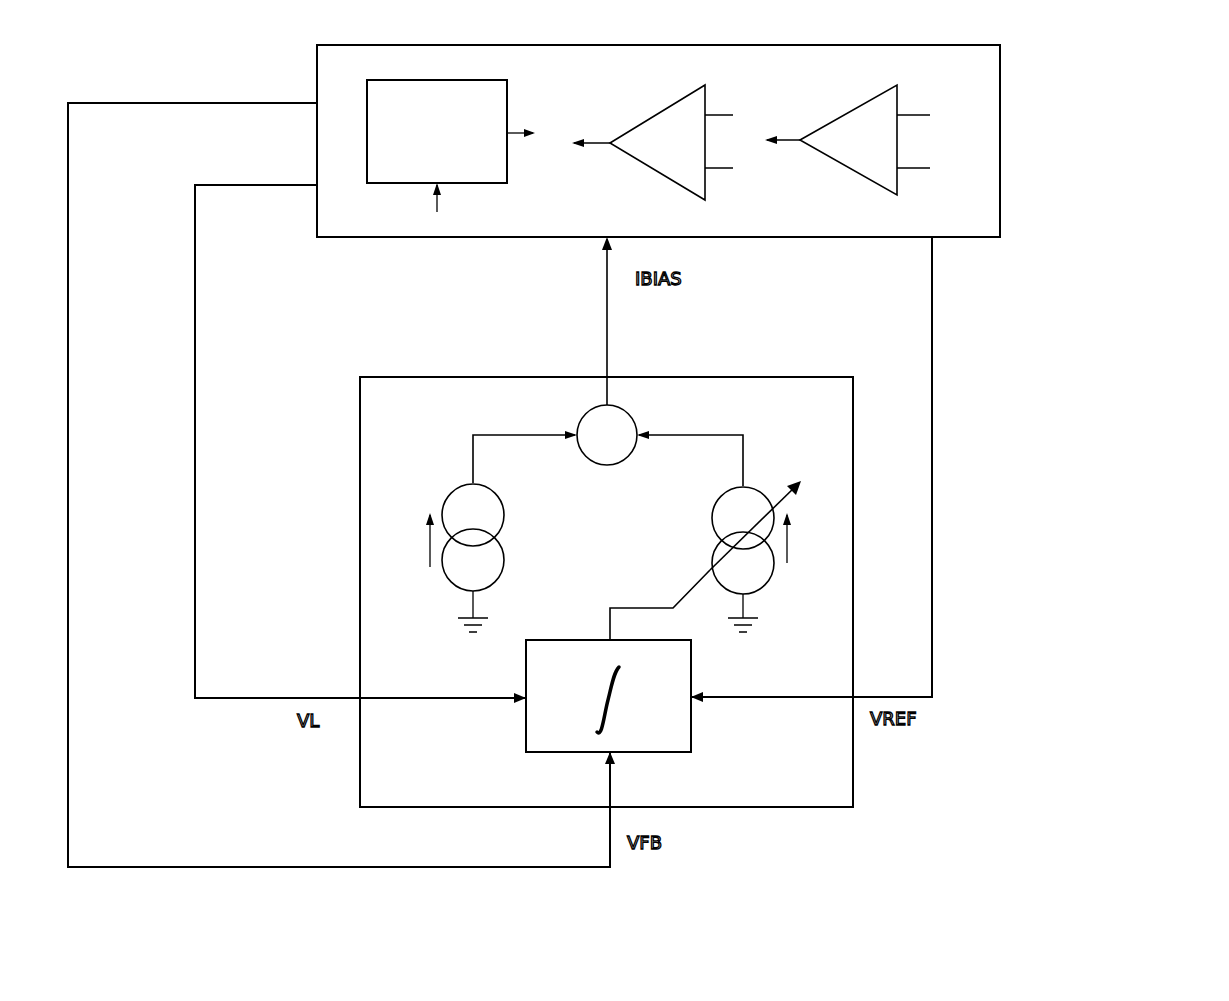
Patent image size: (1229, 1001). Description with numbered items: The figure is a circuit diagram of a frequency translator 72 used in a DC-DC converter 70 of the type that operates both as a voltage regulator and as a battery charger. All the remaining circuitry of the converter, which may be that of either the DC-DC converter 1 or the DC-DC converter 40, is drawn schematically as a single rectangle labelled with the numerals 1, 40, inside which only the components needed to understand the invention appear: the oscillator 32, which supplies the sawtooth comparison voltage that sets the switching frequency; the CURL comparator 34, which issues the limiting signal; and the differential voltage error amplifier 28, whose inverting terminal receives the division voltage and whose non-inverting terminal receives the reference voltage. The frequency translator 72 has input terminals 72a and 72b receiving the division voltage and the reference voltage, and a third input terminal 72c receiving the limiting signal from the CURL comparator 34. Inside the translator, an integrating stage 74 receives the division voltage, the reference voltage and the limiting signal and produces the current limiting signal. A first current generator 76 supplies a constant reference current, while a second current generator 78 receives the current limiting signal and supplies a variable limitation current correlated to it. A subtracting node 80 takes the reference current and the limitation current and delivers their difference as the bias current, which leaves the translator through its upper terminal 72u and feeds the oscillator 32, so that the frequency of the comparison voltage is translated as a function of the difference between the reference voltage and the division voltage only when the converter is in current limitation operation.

The DC-DC converter 1 is at (658, 119).
The DC-DC converter 40 is at (748, 60).
The oscillator 32 is at (493, 108).
The CURL comparator 34 is at (645, 123).
The differential voltage error amplifier 28 is at (835, 128).
The DC-DC converter 70 is at (1055, 182).
The frequency translator 72 is at (378, 403).
The output terminal of block 72 (IBIAS) 72u is at (607, 377).
The input terminal 72a is at (607, 810).
The input terminal 72b is at (853, 700).
The third input terminal 72c is at (358, 698).
The integrating stage 74 is at (530, 725).
The first current generator 76 is at (495, 558).
The second current generator 78 is at (760, 575).
The summing node 80 is at (613, 458).